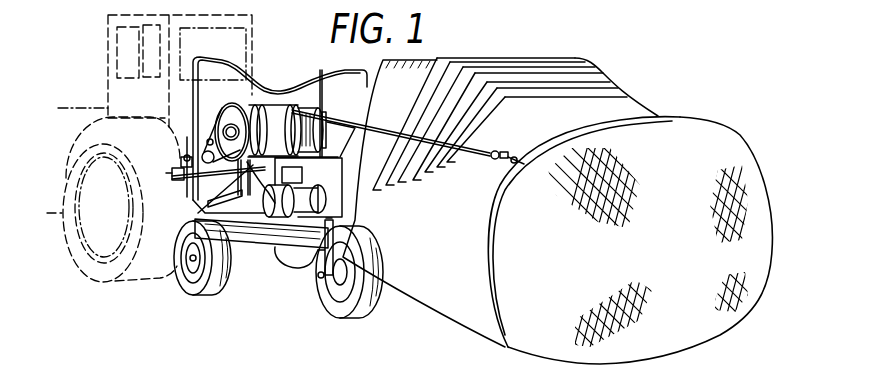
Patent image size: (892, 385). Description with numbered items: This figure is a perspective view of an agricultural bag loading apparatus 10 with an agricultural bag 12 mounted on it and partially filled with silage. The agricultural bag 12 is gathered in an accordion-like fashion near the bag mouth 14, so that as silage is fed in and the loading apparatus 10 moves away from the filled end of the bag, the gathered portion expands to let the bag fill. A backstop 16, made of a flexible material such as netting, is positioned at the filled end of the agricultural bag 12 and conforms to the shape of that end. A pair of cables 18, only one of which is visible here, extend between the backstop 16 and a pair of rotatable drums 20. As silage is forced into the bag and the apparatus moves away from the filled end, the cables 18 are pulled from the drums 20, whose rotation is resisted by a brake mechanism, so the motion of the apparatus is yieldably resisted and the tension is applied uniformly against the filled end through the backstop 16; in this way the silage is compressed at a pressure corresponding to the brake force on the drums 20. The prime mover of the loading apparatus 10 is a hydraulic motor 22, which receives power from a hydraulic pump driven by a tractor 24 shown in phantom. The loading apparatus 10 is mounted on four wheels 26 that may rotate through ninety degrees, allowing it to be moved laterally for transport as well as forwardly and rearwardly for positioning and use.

The agricultural bag loading apparatus 10 is at (326, 58).
The agricultural bag 12 is at (632, 102).
The bag mouth 14 is at (612, 58).
The backstop 16 is at (707, 144).
The cables 18 is at (384, 98).
The rotatable drums 20 is at (258, 108).
The hydraulic motor 22 is at (274, 251).
The tractor 24 is at (108, 85).
The wheels 26 is at (332, 303).